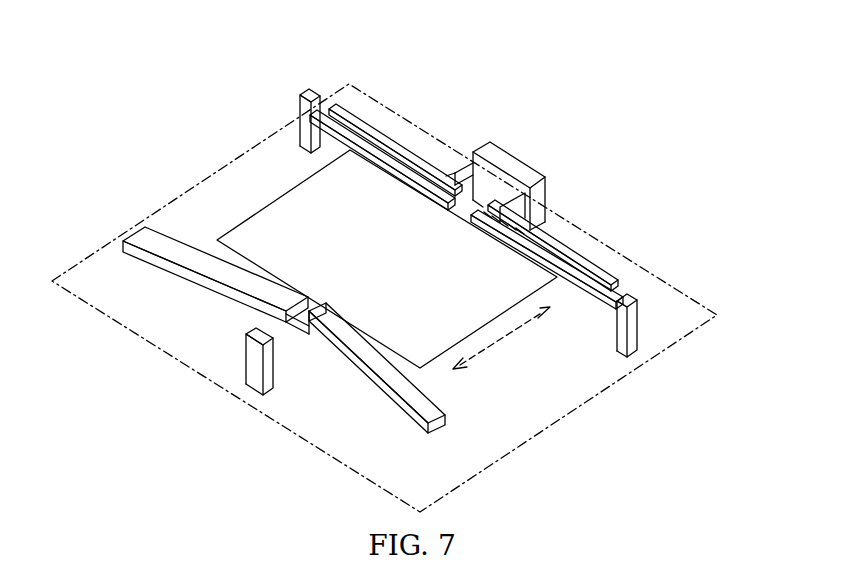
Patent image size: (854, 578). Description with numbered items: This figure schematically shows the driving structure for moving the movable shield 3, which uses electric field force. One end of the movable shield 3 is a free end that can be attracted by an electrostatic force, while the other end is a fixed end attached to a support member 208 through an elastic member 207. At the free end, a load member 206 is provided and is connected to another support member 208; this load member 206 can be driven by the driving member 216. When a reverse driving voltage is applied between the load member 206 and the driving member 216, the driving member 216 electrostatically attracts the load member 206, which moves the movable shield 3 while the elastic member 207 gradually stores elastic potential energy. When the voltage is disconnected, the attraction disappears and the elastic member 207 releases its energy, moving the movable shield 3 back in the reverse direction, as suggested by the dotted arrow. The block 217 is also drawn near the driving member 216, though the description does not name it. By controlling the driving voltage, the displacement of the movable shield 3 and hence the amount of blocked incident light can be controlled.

The movable shield 3 is at (400, 285).
The load member 206 is at (572, 266).
The elastic member 207 is at (418, 400).
The support member 208 is at (306, 121).
The driving member 216 is at (377, 134).
The slider block 217 is at (510, 162).